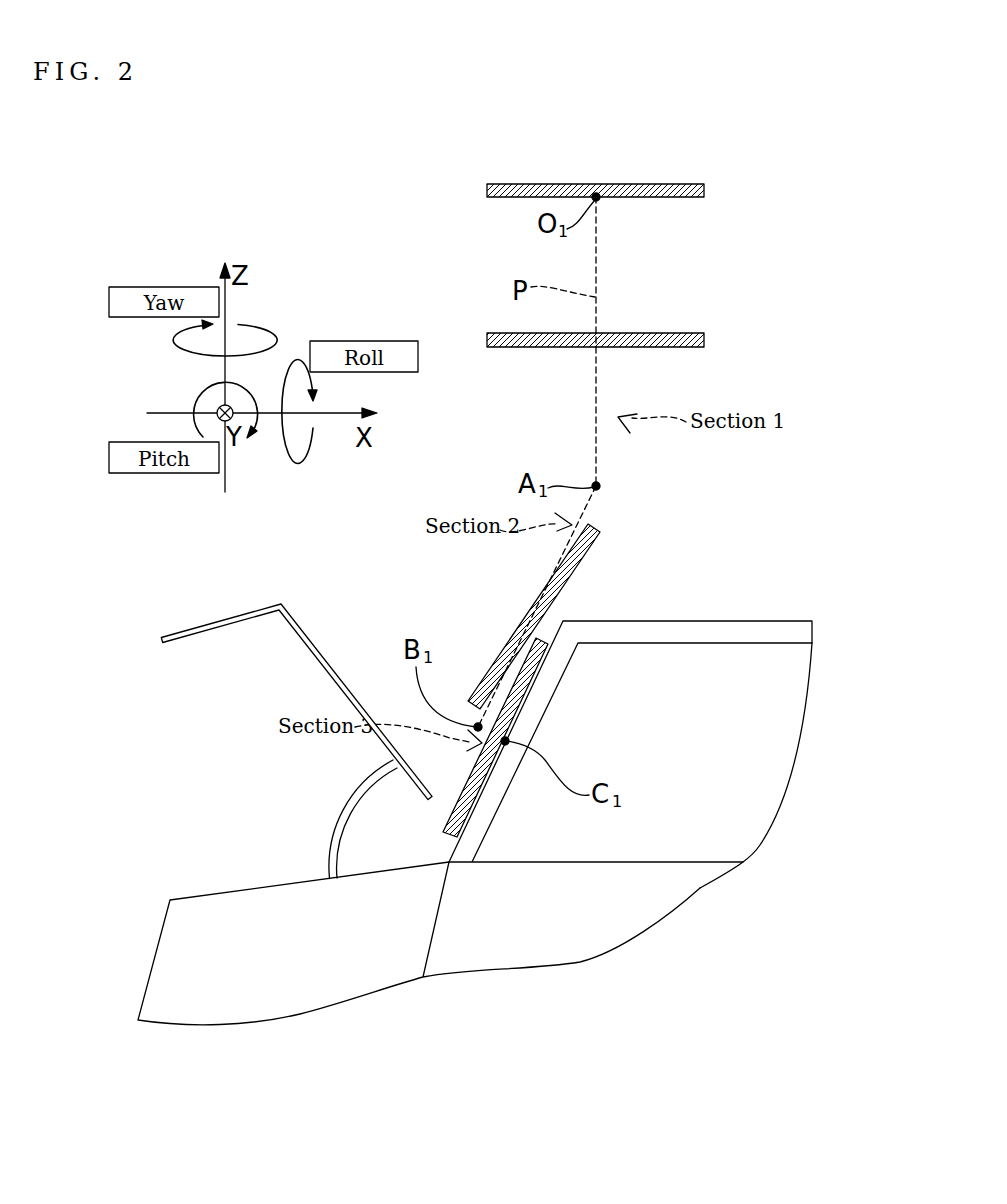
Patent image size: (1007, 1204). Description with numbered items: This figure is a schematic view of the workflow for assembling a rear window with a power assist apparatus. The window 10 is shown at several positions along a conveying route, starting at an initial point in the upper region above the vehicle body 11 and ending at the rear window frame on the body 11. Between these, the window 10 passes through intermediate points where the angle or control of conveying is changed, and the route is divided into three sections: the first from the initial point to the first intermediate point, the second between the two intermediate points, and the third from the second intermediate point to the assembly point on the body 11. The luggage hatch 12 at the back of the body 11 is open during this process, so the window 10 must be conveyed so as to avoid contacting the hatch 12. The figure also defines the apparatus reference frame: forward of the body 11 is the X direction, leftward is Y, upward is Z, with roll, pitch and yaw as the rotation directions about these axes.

The window 10 is at (704, 186).
The vehicle body 11 is at (687, 620).
The luggage hatch 12 is at (308, 630).